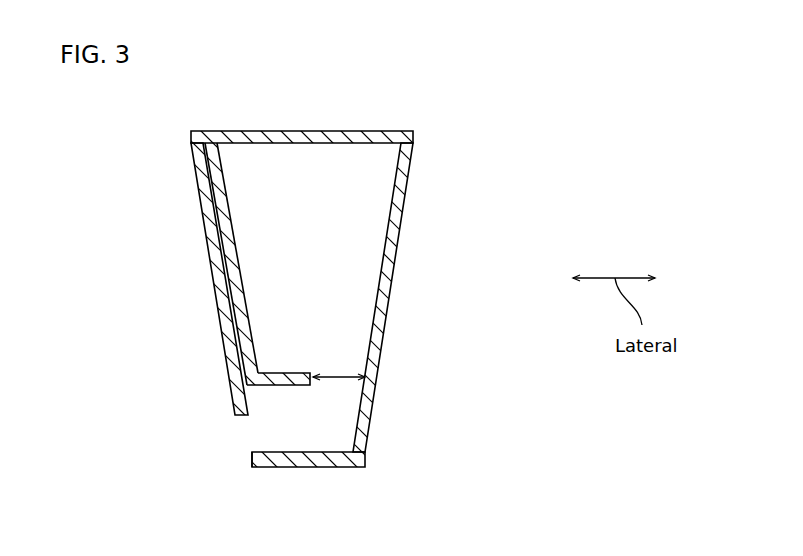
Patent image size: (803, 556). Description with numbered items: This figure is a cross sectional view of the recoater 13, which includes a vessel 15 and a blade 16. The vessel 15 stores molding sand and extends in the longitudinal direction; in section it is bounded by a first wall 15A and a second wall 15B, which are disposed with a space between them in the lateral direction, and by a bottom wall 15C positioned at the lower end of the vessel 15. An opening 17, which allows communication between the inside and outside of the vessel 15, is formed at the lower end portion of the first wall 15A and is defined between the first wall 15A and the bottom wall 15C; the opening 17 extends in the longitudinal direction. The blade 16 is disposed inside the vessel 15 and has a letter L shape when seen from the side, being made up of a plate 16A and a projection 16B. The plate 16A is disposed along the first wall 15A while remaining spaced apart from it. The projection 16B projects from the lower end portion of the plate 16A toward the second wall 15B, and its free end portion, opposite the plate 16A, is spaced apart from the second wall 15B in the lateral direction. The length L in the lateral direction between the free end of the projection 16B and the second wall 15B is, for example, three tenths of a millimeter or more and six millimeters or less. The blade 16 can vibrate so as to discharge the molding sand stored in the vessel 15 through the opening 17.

The recoater 13 is at (307, 130).
The vessel 15 is at (401, 278).
The first wall 15A is at (213, 265).
The second wall 15B is at (392, 281).
The bottom wall 15C is at (302, 467).
The blade 16 is at (401, 278).
The plate 16A is at (231, 268).
The projection 16B is at (286, 350).
The opening 17 is at (232, 479).
The length in the lateral direction L is at (337, 377).